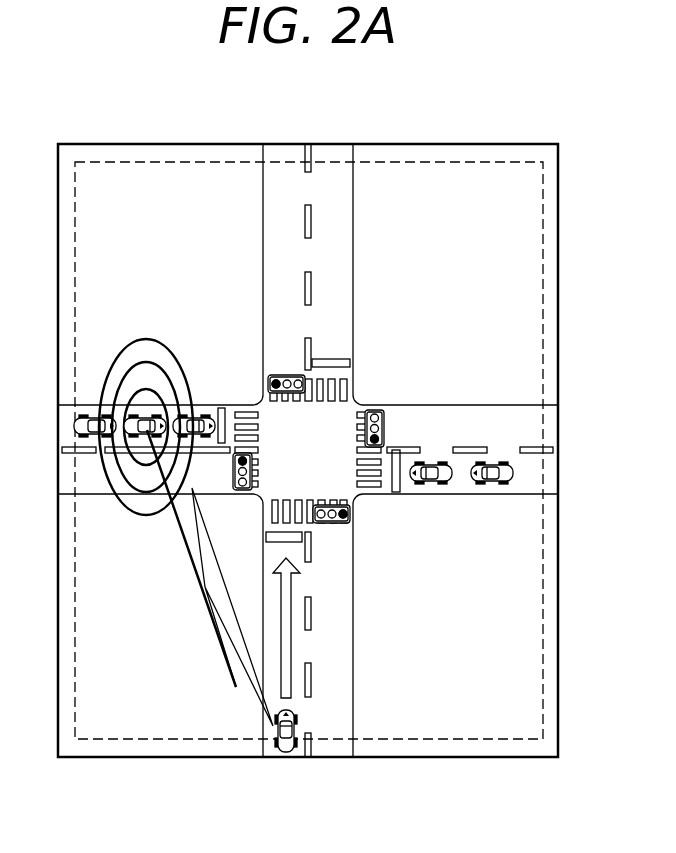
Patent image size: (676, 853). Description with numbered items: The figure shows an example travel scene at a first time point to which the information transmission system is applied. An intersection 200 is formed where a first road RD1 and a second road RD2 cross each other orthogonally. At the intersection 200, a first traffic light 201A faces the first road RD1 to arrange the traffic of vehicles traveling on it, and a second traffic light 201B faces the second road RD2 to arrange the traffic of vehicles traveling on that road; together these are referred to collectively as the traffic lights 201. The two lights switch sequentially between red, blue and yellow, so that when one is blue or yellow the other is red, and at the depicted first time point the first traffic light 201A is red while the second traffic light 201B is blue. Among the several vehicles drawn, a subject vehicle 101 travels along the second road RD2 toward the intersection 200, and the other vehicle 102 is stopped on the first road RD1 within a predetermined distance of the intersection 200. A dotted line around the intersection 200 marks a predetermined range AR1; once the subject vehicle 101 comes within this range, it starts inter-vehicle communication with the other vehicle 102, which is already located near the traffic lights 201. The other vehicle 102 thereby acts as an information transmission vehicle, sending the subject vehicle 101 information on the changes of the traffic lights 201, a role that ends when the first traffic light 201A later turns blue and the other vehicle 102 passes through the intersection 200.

The subject vehicle 101 is at (298, 725).
The other vehicle 102 is at (150, 412).
The intersection 200 is at (350, 408).
The traffic lights 201 is at (339, 411).
The first traffic light 201A is at (241, 452).
The second traffic light 201B is at (287, 373).
The first road RD1 is at (92, 485).
The second road RD2 is at (334, 627).
The predetermined range AR1 is at (483, 727).